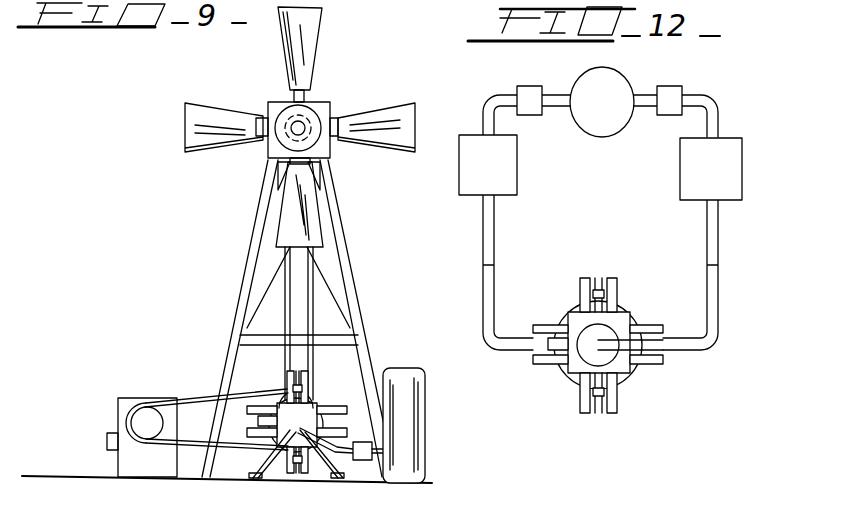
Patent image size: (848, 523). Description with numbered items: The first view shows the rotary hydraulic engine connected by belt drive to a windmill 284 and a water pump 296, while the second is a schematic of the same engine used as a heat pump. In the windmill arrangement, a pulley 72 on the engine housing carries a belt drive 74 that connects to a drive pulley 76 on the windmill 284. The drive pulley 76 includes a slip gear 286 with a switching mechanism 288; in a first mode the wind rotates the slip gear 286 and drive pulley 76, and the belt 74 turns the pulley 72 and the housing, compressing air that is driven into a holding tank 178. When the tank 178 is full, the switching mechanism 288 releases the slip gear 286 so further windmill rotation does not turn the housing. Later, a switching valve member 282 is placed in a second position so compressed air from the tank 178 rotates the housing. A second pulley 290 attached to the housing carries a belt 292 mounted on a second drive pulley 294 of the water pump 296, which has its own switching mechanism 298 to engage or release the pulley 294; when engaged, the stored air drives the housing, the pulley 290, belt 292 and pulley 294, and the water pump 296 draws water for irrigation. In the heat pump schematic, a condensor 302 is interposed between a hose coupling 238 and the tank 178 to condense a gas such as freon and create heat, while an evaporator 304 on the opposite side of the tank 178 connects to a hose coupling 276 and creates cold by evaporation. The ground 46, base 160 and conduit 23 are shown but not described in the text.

In FIG. 9, the ground surface 46 is at (418, 520).
In FIG. 9, the windmill 284 is at (352, 245).
In FIG. 9, the belt drive 74 is at (315, 323).
In FIG. 9, the second pulley 290 is at (347, 390).
In FIG. 9, the switching mechanism 288 is at (332, 152).
In FIG. 9, the drive pulley 76 is at (312, 118).
In FIG. 9, the slip gear 286 is at (277, 143).
In FIG. 9, the pulley 72 is at (337, 417).
In FIG. 9, the pump support frame 160 is at (360, 522).
In FIG. 9, the switching valve member 282 is at (365, 442).
In FIG. 9, the holding tank 178 is at (425, 393).
In FIG. 12, the holding tank 178 is at (627, 80).
In FIG. 9, the water pump 296 is at (117, 410).
In FIG. 9, the switching mechanism 298 is at (107, 445).
In FIG. 9, the second drive pulley 294 is at (135, 440).
In FIG. 9, the belt 292 is at (188, 450).
In FIG. 12, the hydraulic conduit 23 is at (718, 338).
In FIG. 12, the evaporator 304 is at (459, 178).
In FIG. 12, the condensor 302 is at (738, 178).
In FIG. 12, the hose coupling 276 is at (570, 375).
In FIG. 12, the hose coupling 238 is at (605, 357).